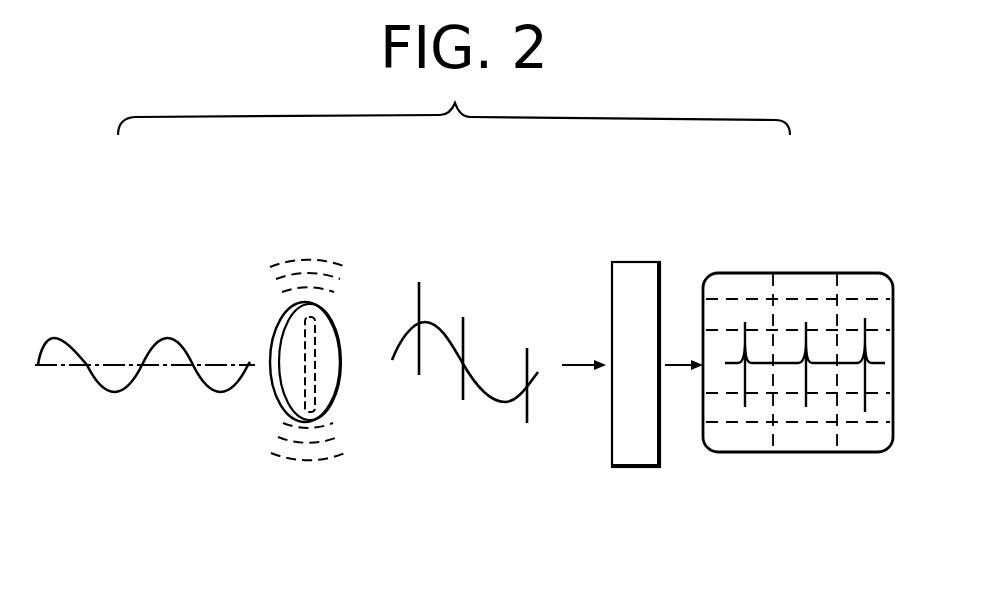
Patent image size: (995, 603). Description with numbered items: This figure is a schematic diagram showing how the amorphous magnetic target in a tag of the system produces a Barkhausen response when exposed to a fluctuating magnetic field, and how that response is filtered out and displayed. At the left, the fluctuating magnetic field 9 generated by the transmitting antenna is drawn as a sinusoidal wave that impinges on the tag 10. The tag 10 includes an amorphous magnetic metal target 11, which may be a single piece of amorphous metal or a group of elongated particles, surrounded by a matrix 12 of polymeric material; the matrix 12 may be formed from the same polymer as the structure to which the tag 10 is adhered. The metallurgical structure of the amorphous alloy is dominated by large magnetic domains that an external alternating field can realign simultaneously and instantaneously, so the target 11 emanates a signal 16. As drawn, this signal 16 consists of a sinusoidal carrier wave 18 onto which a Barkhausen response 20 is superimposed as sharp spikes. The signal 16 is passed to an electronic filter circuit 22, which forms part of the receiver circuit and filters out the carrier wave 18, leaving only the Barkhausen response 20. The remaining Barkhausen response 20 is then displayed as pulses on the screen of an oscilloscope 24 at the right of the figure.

The fluctuating magnetic field 9 is at (65, 339).
The tag 10 is at (278, 328).
The amorphous magnetic metal target 11 is at (313, 355).
The matrix 12 is at (322, 377).
The signal 16 is at (446, 390).
The sinusoidal carrier wave 18 is at (437, 331).
The Barkhausen response 20 is at (465, 335).
The electronic filter circuit 22 is at (617, 382).
The oscilloscope 24 is at (750, 272).